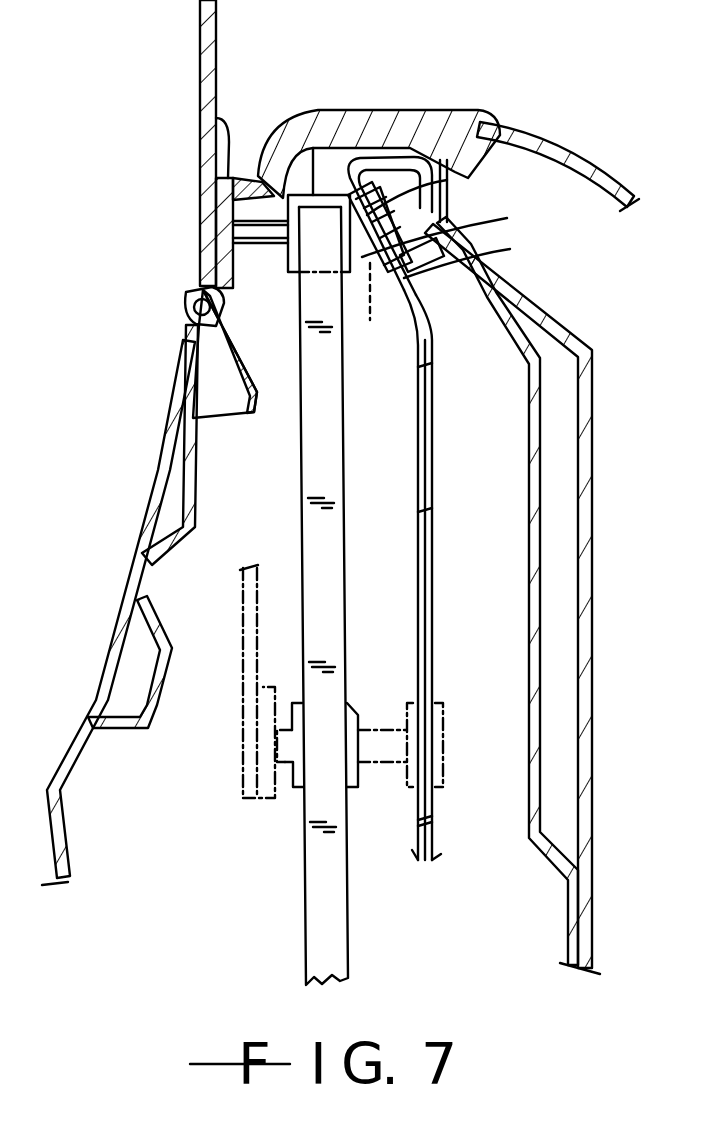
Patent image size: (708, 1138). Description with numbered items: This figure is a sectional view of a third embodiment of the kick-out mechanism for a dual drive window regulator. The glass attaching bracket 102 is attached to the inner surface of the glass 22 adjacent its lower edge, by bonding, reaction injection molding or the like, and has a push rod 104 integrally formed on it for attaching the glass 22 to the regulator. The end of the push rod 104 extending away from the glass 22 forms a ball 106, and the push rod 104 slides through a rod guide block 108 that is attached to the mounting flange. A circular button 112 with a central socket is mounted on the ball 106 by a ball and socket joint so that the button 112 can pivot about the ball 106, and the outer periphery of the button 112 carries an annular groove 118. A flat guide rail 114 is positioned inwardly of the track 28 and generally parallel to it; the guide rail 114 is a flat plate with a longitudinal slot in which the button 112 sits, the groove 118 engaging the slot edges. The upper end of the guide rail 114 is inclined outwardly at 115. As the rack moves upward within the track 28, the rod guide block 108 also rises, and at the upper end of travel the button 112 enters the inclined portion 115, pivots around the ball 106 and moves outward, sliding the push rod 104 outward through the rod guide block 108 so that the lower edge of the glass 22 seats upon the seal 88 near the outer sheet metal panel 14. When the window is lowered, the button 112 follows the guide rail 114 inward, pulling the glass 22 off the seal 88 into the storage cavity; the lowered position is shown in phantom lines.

The glass 22 is at (218, 40).
The glass attaching bracket 102 is at (216, 118).
The rod guide block 108 is at (320, 112).
The annular groove 118 is at (447, 180).
The circular button 112 is at (455, 227).
The inclined portion of the guide rail 115 is at (510, 249).
The ball 106 is at (370, 320).
The flat guide rail 114 is at (433, 522).
The push rod 104 is at (262, 246).
The track 28 is at (302, 905).
The seal 88 is at (192, 296).
The outer sheet metal panel 14 is at (174, 373).